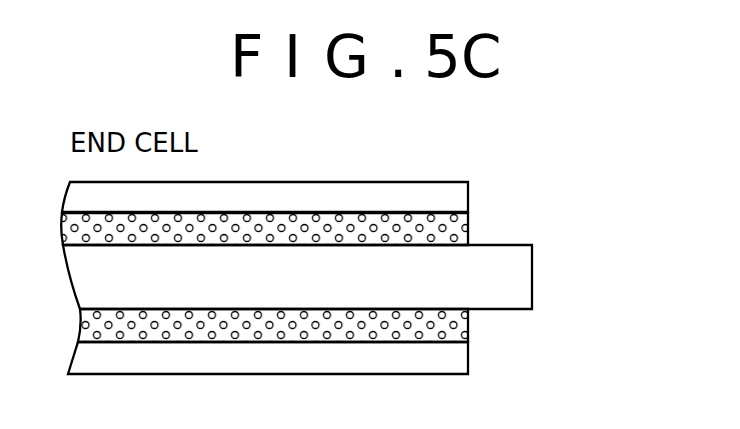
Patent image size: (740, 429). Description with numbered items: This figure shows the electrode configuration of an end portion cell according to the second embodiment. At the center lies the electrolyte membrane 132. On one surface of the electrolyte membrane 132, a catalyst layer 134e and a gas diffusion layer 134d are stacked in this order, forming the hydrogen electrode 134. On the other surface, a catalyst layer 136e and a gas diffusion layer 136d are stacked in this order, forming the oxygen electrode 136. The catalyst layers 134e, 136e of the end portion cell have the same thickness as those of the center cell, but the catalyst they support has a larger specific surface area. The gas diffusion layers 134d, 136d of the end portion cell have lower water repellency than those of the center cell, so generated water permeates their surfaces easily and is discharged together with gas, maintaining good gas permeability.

The electrolyte membrane 132 is at (532, 283).
The hydrogen electrode 134 is at (358, 200).
The gas diffusion layer 134d is at (468, 194).
The catalyst layer 134e is at (468, 228).
The oxygen electrode 136 is at (365, 354).
The catalyst layer 136e is at (468, 333).
The gas diffusion layer 136d is at (468, 358).